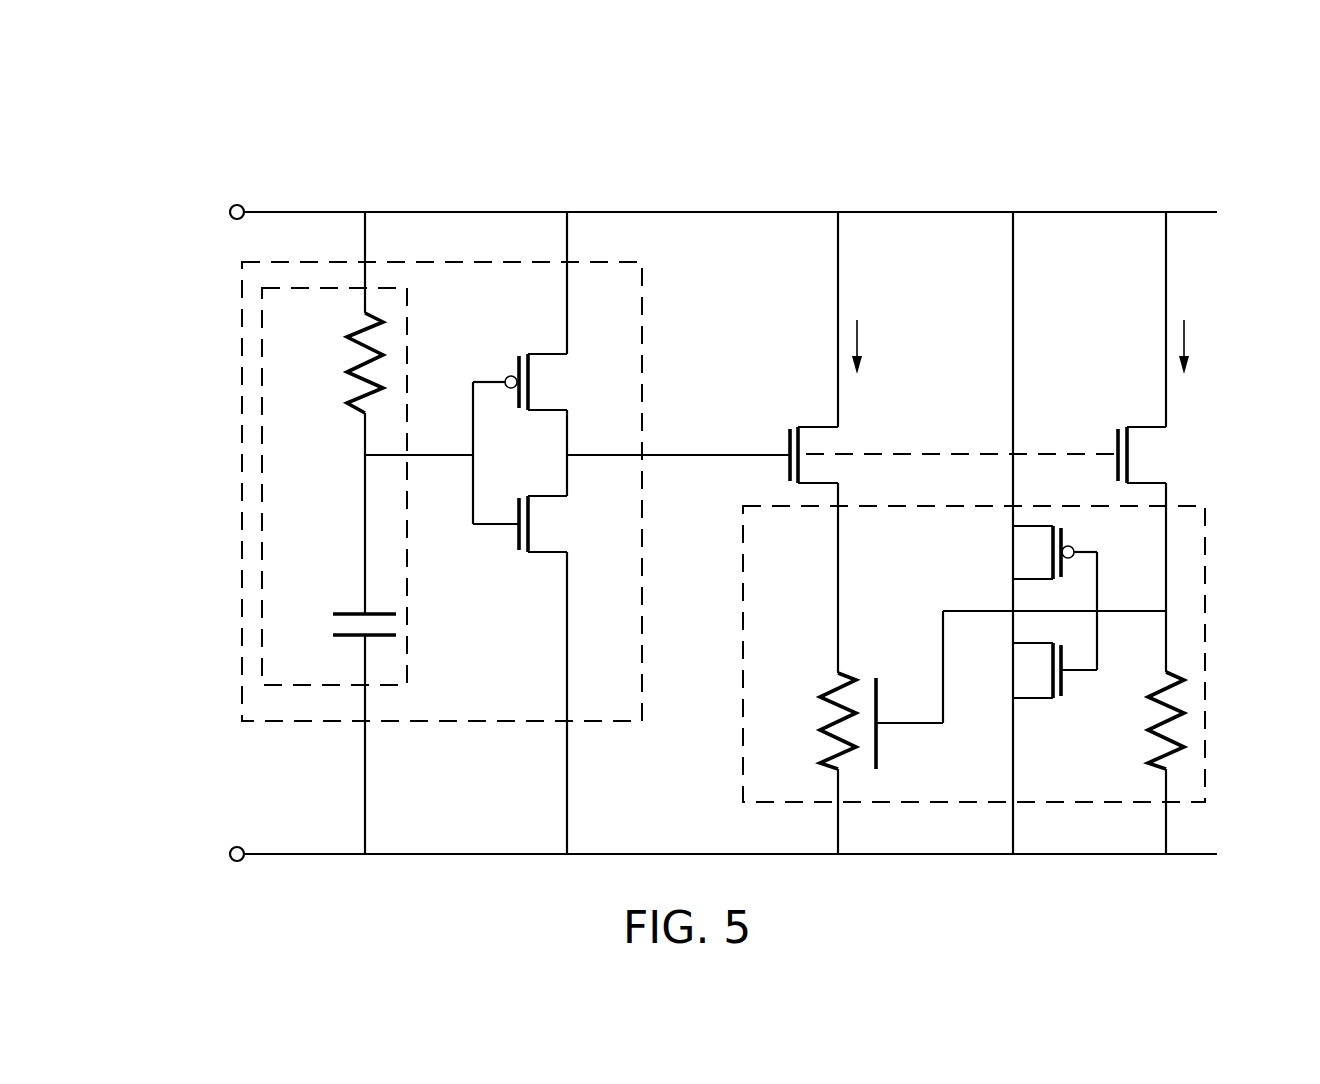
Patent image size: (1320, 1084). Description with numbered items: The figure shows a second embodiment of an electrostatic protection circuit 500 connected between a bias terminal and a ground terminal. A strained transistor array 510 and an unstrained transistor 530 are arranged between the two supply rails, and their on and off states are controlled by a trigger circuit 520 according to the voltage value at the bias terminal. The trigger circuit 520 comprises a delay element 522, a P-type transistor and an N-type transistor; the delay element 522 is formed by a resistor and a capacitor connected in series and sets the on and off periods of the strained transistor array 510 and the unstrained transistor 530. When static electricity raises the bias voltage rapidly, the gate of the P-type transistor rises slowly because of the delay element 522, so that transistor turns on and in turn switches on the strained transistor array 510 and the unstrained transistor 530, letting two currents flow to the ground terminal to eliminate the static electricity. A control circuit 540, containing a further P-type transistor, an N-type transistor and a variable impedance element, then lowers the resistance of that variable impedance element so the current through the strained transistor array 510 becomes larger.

The electrostatic protection circuit 500 is at (1181, 160).
The strained transistor array 510 is at (806, 410).
The trigger circuit 520 is at (403, 491).
The delay element 522 is at (262, 497).
The unstrained transistor 530 is at (1132, 410).
The control circuit 540 is at (1205, 613).